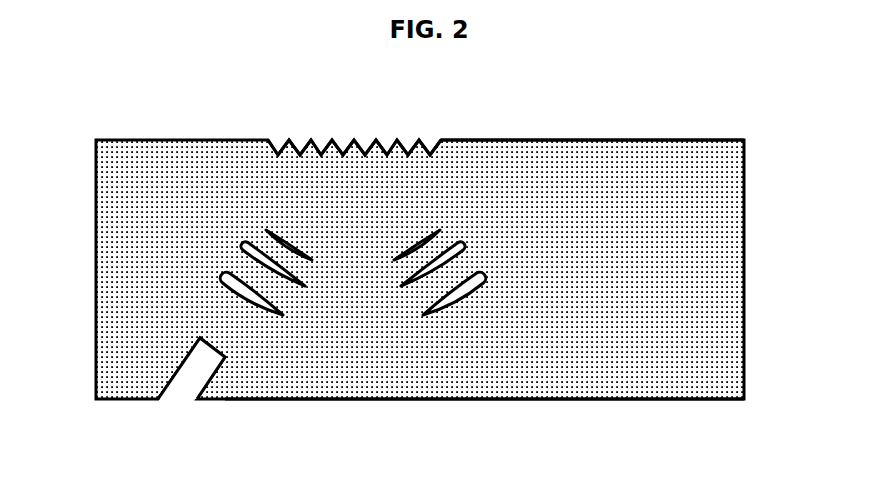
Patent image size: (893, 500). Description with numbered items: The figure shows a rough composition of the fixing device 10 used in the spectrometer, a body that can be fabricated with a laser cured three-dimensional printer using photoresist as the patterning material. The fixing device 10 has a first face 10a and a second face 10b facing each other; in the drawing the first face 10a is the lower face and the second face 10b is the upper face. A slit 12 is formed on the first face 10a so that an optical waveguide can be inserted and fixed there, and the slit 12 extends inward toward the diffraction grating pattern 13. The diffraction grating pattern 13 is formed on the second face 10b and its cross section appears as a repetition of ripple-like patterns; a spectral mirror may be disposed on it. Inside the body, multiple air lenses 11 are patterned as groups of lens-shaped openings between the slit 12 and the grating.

The fixing device 10 is at (745, 265).
The first face 10a is at (738, 400).
The second face 10b is at (717, 140).
The air lenses 11 is at (223, 275).
The slit 12 is at (192, 390).
The diffraction grating pattern 13 is at (279, 155).